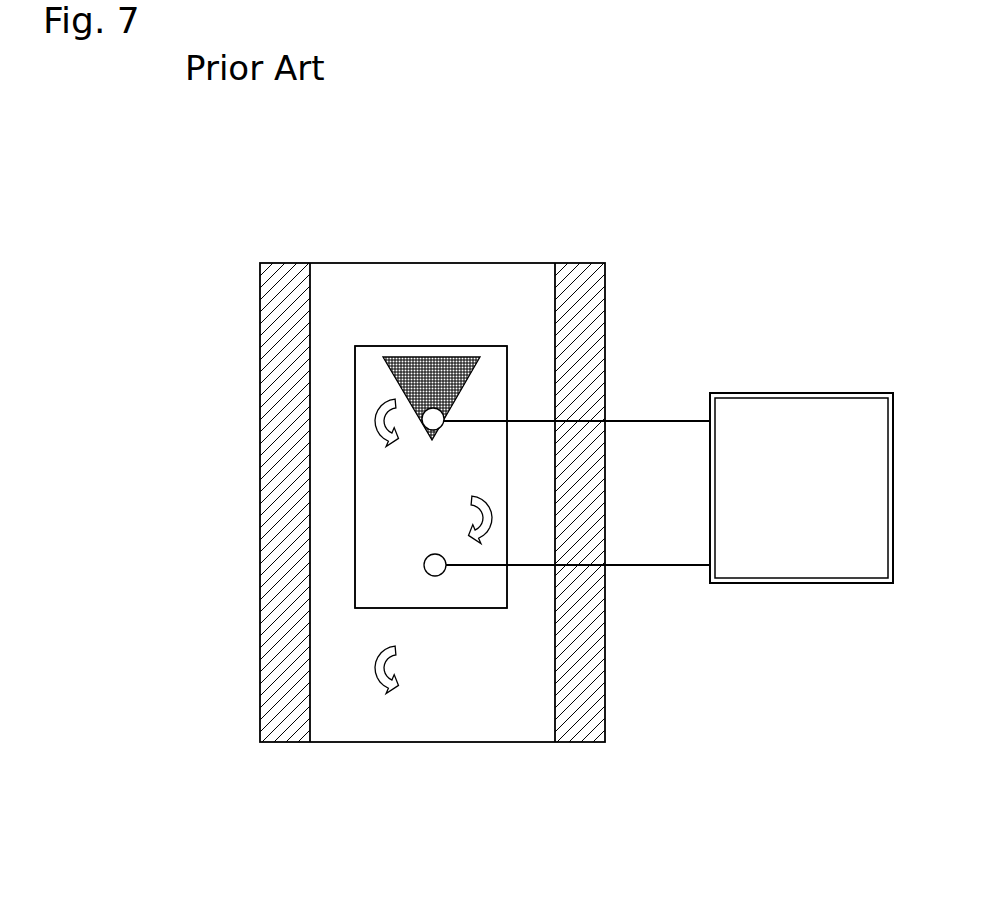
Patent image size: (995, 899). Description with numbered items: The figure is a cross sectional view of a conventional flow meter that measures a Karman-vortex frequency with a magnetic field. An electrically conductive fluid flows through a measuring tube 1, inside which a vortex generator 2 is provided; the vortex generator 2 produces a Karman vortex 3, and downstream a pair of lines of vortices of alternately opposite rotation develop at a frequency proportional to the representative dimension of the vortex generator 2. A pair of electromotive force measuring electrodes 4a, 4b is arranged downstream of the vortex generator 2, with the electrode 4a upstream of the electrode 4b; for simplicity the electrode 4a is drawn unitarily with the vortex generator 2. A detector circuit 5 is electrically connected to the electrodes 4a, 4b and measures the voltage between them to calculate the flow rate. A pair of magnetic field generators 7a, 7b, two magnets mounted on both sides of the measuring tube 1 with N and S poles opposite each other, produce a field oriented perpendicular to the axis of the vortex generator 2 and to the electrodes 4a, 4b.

The measuring tube 1 is at (593, 292).
The vortex generator 2 is at (412, 362).
The Karman vortex 3 is at (368, 428).
The electromotive force measuring electrode 4a is at (433, 430).
The electromotive force measuring electrode 4b is at (435, 576).
The detector circuit 5 is at (763, 583).
The magnetic field generator 7a is at (365, 515).
The magnetic field generator 7b is at (431, 477).